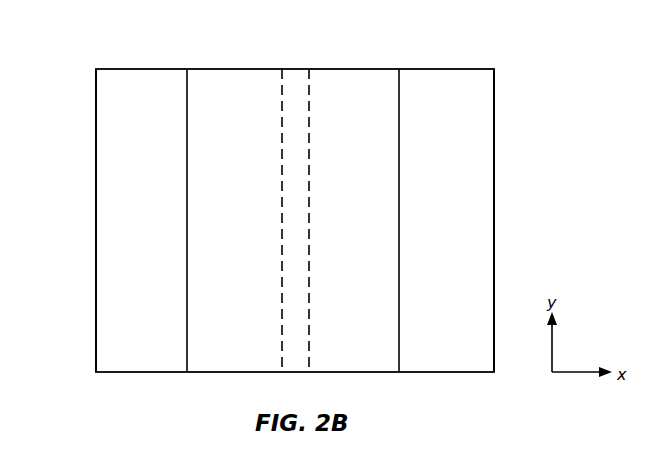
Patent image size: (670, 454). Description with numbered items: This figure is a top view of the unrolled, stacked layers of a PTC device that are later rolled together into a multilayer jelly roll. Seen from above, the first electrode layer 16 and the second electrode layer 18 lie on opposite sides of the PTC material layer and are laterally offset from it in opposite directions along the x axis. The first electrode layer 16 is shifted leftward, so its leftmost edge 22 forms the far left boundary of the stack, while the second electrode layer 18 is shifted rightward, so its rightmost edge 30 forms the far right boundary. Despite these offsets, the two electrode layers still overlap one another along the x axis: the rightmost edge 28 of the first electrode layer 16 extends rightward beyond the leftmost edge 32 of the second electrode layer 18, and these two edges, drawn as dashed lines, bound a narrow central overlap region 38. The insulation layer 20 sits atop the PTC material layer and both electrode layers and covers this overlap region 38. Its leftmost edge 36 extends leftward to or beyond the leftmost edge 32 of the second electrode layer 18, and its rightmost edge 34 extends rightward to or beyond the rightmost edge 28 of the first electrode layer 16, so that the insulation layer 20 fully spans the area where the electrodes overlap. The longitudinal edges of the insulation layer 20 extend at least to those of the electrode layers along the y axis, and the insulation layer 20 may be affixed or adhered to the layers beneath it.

The first electrode layer 16 is at (117, 172).
The second electrode layer 18 is at (476, 188).
The insulation layer 20 is at (357, 85).
The leftmost edge of the first electrode layer 22 is at (96, 253).
The rightmost edge of the first electrode layer 28 is at (309, 199).
The rightmost edge of the second electrode layer 30 is at (496, 244).
The leftmost edge of the second electrode layer 32 is at (282, 199).
The rightmost edge of the insulation layer 34 is at (399, 110).
The leftmost edge of the insulation layer 36 is at (186, 108).
The overlap region 38 is at (296, 83).